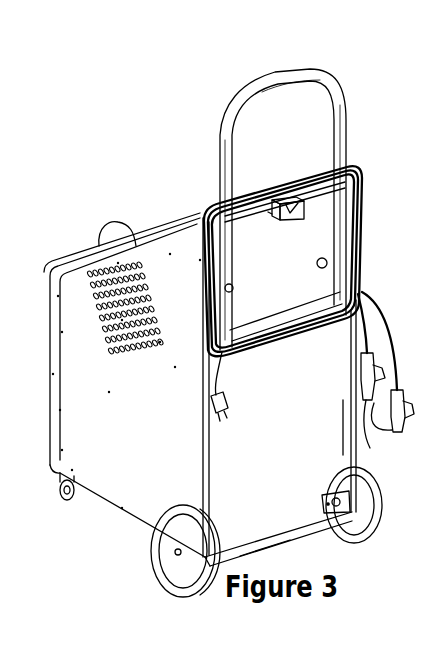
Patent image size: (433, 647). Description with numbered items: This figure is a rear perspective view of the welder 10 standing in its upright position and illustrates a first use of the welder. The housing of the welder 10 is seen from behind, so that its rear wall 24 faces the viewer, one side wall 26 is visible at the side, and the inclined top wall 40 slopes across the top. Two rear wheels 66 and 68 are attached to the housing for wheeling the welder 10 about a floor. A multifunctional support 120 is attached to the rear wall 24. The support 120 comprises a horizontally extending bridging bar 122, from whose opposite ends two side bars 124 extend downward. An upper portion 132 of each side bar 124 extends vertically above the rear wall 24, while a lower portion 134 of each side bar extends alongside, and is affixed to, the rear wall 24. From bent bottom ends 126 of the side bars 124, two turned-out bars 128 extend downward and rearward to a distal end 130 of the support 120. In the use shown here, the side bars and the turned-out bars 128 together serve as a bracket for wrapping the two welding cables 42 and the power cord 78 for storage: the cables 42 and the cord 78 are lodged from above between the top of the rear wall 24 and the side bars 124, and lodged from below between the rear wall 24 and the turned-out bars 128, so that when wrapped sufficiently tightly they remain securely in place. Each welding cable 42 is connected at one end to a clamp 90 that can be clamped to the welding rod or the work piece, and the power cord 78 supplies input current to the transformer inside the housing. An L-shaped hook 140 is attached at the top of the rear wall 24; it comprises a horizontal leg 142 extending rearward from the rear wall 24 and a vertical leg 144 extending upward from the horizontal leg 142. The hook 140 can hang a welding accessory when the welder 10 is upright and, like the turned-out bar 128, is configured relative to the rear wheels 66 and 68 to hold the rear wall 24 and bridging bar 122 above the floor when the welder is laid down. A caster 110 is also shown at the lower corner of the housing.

The welder 10 is at (340, 58).
The rear wall 24 is at (267, 455).
The side wall 26 is at (119, 437).
The inclined top wall 40 is at (152, 230).
The welding cables 42 is at (378, 323).
The rear wheel 66 is at (181, 590).
The rear wheel 68 is at (354, 543).
The power cord 78 is at (226, 390).
The clamp 90 is at (370, 438).
The caster 110 is at (69, 502).
The multifunctional support 120 is at (303, 201).
The bridging bar 122 is at (278, 78).
The side bars 124 is at (237, 156).
The bent bottom ends 126 is at (334, 289).
The turned-out bars 128 is at (336, 306).
The distal end 130 is at (345, 318).
The upper portion 132 is at (333, 151).
The lower portion 134 is at (225, 289).
The L-shaped hook 140 is at (278, 222).
The horizontal leg 142 is at (278, 221).
The vertical leg 144 is at (306, 212).